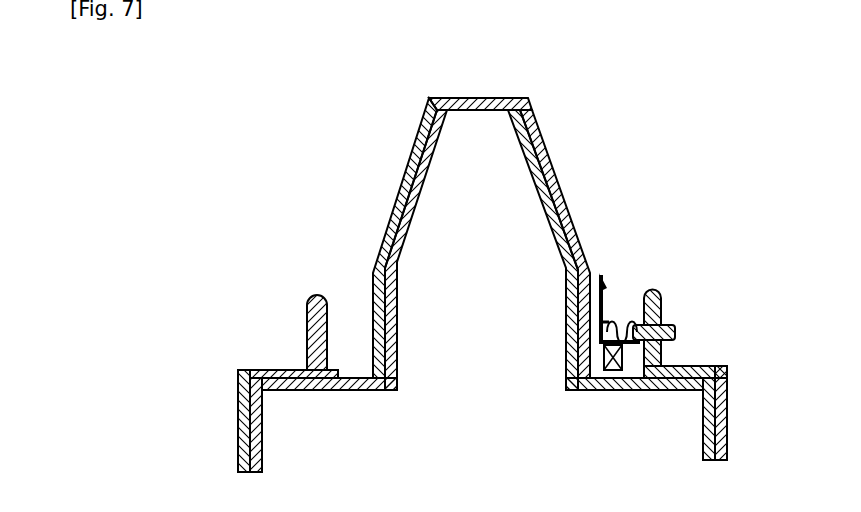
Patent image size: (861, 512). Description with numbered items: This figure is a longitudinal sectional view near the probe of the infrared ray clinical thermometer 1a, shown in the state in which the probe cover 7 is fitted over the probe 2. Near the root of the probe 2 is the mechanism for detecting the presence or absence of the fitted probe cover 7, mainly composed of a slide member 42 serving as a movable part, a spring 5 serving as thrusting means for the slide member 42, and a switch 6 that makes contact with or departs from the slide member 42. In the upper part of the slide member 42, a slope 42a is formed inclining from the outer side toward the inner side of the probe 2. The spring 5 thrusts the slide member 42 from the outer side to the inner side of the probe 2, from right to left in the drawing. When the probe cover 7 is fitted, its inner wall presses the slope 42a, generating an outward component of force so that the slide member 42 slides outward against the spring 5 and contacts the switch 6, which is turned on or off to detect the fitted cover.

The infrared ray clinical thermometer 1a is at (333, 125).
The probe 2 is at (548, 162).
The probe cover 7 is at (537, 122).
The slide member 42 is at (609, 288).
The slope 42a is at (595, 278).
The spring 5 is at (630, 322).
The switch 6 is at (611, 372).